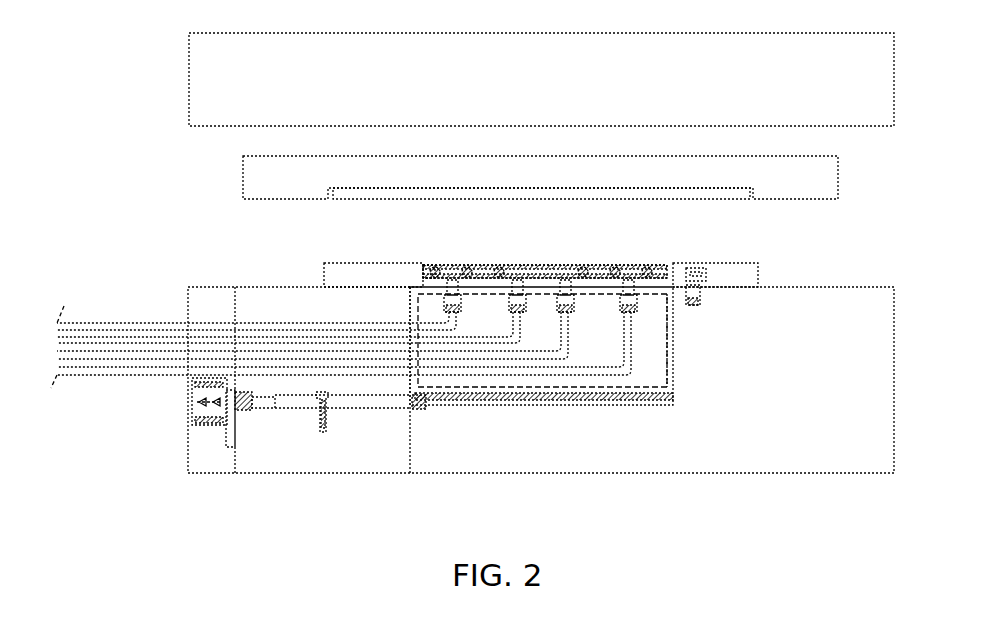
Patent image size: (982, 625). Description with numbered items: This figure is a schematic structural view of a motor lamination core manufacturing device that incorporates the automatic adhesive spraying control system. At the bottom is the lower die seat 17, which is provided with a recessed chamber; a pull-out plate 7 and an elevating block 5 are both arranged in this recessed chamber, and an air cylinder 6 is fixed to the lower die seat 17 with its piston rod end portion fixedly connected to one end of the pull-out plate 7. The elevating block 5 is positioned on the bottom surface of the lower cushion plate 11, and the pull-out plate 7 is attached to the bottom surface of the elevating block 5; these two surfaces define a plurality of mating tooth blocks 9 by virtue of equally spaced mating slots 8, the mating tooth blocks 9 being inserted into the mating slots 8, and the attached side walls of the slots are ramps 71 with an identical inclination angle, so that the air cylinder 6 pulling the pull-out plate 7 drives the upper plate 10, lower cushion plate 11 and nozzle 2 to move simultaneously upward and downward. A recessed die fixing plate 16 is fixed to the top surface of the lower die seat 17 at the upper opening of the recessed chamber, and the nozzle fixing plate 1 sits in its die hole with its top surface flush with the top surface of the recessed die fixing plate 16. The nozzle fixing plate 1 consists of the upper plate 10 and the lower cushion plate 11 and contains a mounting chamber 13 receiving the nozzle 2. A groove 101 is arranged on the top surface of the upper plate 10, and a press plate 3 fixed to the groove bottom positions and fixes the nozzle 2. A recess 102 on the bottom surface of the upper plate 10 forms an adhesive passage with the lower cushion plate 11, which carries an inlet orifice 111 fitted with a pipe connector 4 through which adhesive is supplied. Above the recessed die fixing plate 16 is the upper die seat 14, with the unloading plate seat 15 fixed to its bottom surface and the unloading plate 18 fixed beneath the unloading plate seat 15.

The nozzle fixing plate 1 is at (675, 280).
The nozzle 2 is at (436, 265).
The press plate 3 is at (422, 263).
The pipe connector 4 is at (453, 308).
The elevating block 5 is at (675, 388).
The air cylinder 6 is at (188, 412).
The pull-out plate 7 is at (380, 402).
The mating slots 8 is at (412, 395).
The mating tooth blocks 9 is at (417, 398).
The upper plate 10 is at (663, 267).
The lower cushion plate 11 is at (655, 287).
The mounting chamber 13 is at (455, 262).
The upper die seat 14 is at (845, 85).
The unloading plate seat 15 is at (822, 178).
The recessed die fixing plate 16 is at (740, 279).
The lower die seat 17 is at (818, 364).
The unloading plate 18 is at (720, 194).
The ramps 71 is at (420, 400).
The groove 101 is at (557, 268).
The recess 102 is at (520, 263).
The inlet orifice 111 is at (440, 303).